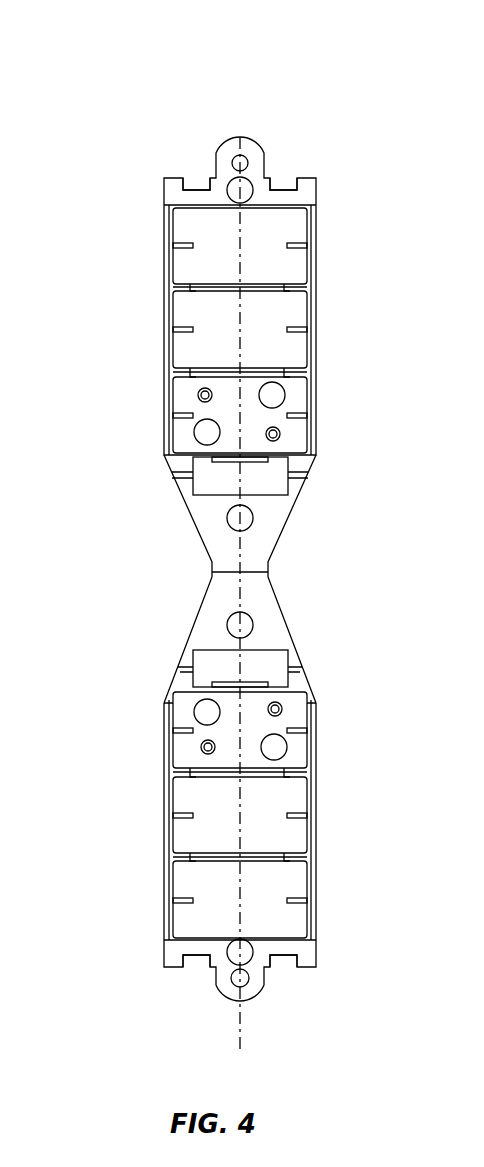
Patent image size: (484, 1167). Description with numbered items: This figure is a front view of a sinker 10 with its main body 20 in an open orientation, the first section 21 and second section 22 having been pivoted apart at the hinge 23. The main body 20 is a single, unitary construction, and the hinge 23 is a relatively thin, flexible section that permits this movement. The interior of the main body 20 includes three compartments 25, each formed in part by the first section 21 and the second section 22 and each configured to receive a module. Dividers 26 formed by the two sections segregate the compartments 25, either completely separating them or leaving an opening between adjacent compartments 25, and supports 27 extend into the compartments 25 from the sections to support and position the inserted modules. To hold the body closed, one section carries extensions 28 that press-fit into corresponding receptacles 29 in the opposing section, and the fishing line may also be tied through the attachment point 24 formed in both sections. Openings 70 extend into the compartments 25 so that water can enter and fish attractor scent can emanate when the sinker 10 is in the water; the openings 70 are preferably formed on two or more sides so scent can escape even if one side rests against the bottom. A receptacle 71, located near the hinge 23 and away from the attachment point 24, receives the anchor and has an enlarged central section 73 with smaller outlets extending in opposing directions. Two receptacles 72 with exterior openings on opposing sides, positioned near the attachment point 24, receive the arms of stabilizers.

The sinker 10 is at (132, 115).
The main body 20 is at (137, 840).
The first section 21 is at (166, 272).
The second section 22 is at (166, 752).
The hinge 23 is at (230, 568).
The attachment point 24 is at (244, 157).
The compartments 25 is at (290, 310).
The dividers 26 is at (196, 369).
The supports 27 is at (185, 243).
The extensions 28 is at (250, 183).
The receptacles 29 is at (230, 627).
The openings 70 is at (278, 392).
The receptacle 71 is at (287, 467).
The receptacles 72 is at (175, 196).
The enlarged central section 73 is at (262, 477).